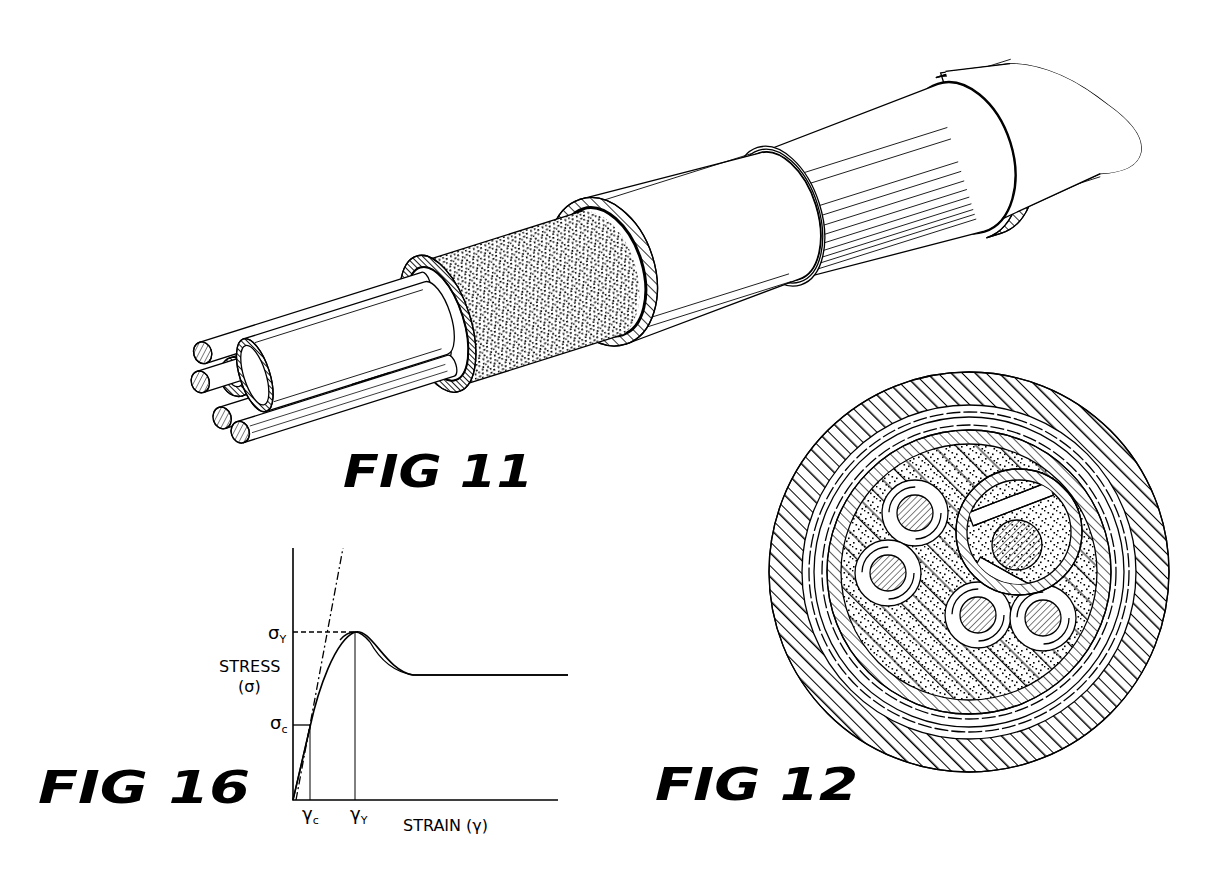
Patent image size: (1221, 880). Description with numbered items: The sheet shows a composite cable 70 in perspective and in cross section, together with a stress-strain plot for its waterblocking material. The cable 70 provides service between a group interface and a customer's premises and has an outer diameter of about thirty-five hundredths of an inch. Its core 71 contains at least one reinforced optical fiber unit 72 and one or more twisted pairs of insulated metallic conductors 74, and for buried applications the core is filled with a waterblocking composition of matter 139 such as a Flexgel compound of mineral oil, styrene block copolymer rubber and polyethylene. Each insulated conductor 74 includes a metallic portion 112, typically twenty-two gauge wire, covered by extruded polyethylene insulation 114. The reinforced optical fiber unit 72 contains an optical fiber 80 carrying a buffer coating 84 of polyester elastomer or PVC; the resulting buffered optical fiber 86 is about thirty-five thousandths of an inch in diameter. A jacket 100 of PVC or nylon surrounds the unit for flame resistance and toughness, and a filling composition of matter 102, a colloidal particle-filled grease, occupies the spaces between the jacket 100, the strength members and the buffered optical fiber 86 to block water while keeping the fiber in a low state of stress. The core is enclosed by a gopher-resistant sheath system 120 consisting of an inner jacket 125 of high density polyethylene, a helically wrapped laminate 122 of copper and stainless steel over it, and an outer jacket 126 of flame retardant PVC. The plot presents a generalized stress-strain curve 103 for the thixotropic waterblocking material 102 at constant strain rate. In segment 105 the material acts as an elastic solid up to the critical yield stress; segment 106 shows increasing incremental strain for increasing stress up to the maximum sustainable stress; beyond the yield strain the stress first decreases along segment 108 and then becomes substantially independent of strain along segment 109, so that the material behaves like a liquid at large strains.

In FIG. 11, the composite cable 70 is at (528, 186).
In FIG. 12, the composite cable 70 is at (1038, 355).
In FIG. 11, the core 71 is at (360, 404).
In FIG. 11, the reinforced optical fiber unit 72 is at (318, 316).
In FIG. 12, the reinforced optical fiber unit 72 is at (1040, 465).
In FIG. 11, the insulated metallic conductors 74 is at (208, 340).
In FIG. 12, the insulated metallic conductors 74 is at (880, 520).
In FIG. 12, the optical fiber 80 is at (1080, 546).
In FIG. 12, the buffer coating 84 is at (1063, 502).
In FIG. 12, the buffered optical fiber 86 is at (1150, 620).
In FIG. 11, the jacket 100 is at (240, 350).
In FIG. 12, the jacket 100 is at (1137, 441).
In FIG. 12, the filling composition of matter 102 is at (1078, 525).
In FIG. 16, the stress-strain curve 103 is at (478, 627).
In FIG. 16, the segment of the stress-strain curve 105 is at (299, 753).
In FIG. 16, the segment of the stress-strain curve 106 is at (330, 640).
In FIG. 16, the segment of the stress-strain curve 108 is at (378, 649).
In FIG. 16, the segment of the stress-strain curve 109 is at (503, 667).
In FIG. 12, the metallic portion 112 is at (890, 453).
In FIG. 12, the insulation 114 is at (905, 470).
In FIG. 12, the gopher-resistant sheath system 120 is at (1058, 393).
In FIG. 11, the helically wrapped laminate 122 is at (780, 141).
In FIG. 12, the helically wrapped laminate 122 is at (1078, 733).
In FIG. 11, the inner jacket 125 is at (592, 198).
In FIG. 12, the inner jacket 125 is at (973, 715).
In FIG. 11, the outer jacket 126 is at (918, 94).
In FIG. 12, the outer jacket 126 is at (1127, 680).
In FIG. 11, the waterblocking composition of matter 139 is at (459, 251).
In FIG. 12, the waterblocking composition of matter 139 is at (840, 640).